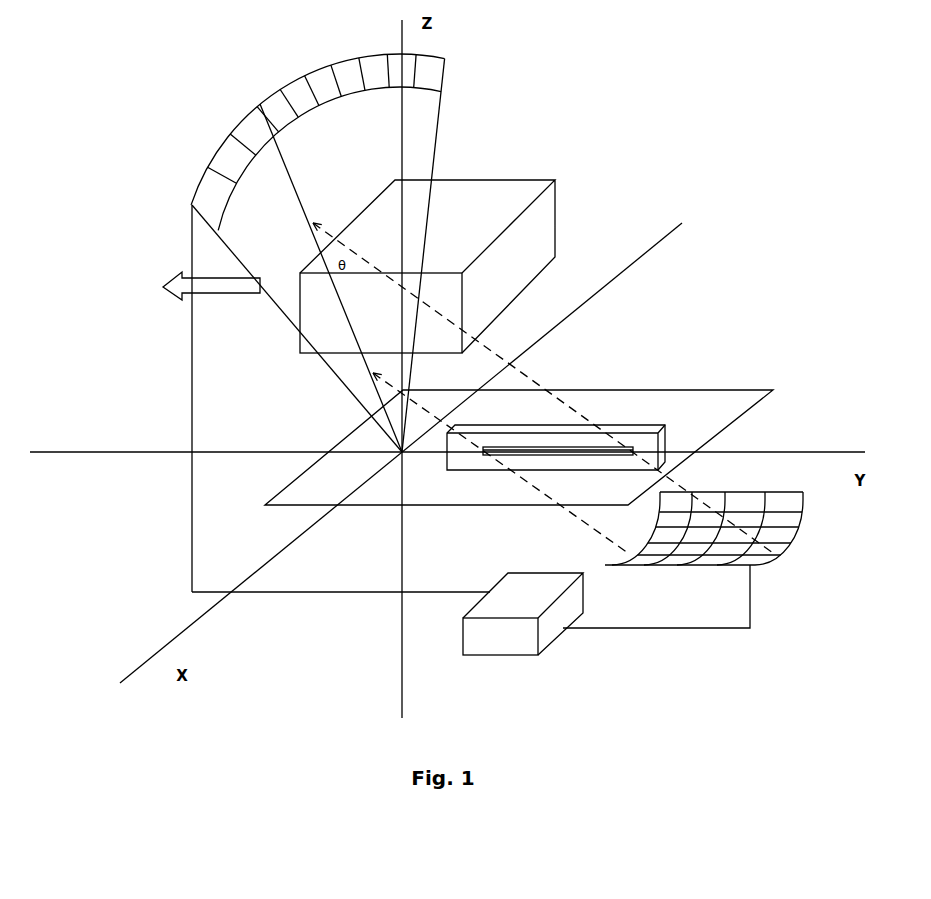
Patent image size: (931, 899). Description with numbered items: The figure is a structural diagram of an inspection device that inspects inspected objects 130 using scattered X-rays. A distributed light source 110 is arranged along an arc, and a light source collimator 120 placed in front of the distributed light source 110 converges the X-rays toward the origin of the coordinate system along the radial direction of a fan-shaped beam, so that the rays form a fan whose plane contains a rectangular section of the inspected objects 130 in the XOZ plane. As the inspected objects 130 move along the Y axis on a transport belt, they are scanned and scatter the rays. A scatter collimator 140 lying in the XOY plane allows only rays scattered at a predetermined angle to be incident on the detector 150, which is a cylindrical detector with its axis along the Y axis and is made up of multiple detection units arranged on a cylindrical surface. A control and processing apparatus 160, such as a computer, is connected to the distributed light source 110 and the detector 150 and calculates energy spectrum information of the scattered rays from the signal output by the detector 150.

The distributed light source 110 is at (260, 95).
The light source collimator 120 is at (220, 195).
The inspected objects 130 is at (479, 168).
The scatter collimator 140 is at (560, 437).
The detector 150 is at (683, 560).
The control and processing apparatus 160 is at (522, 563).